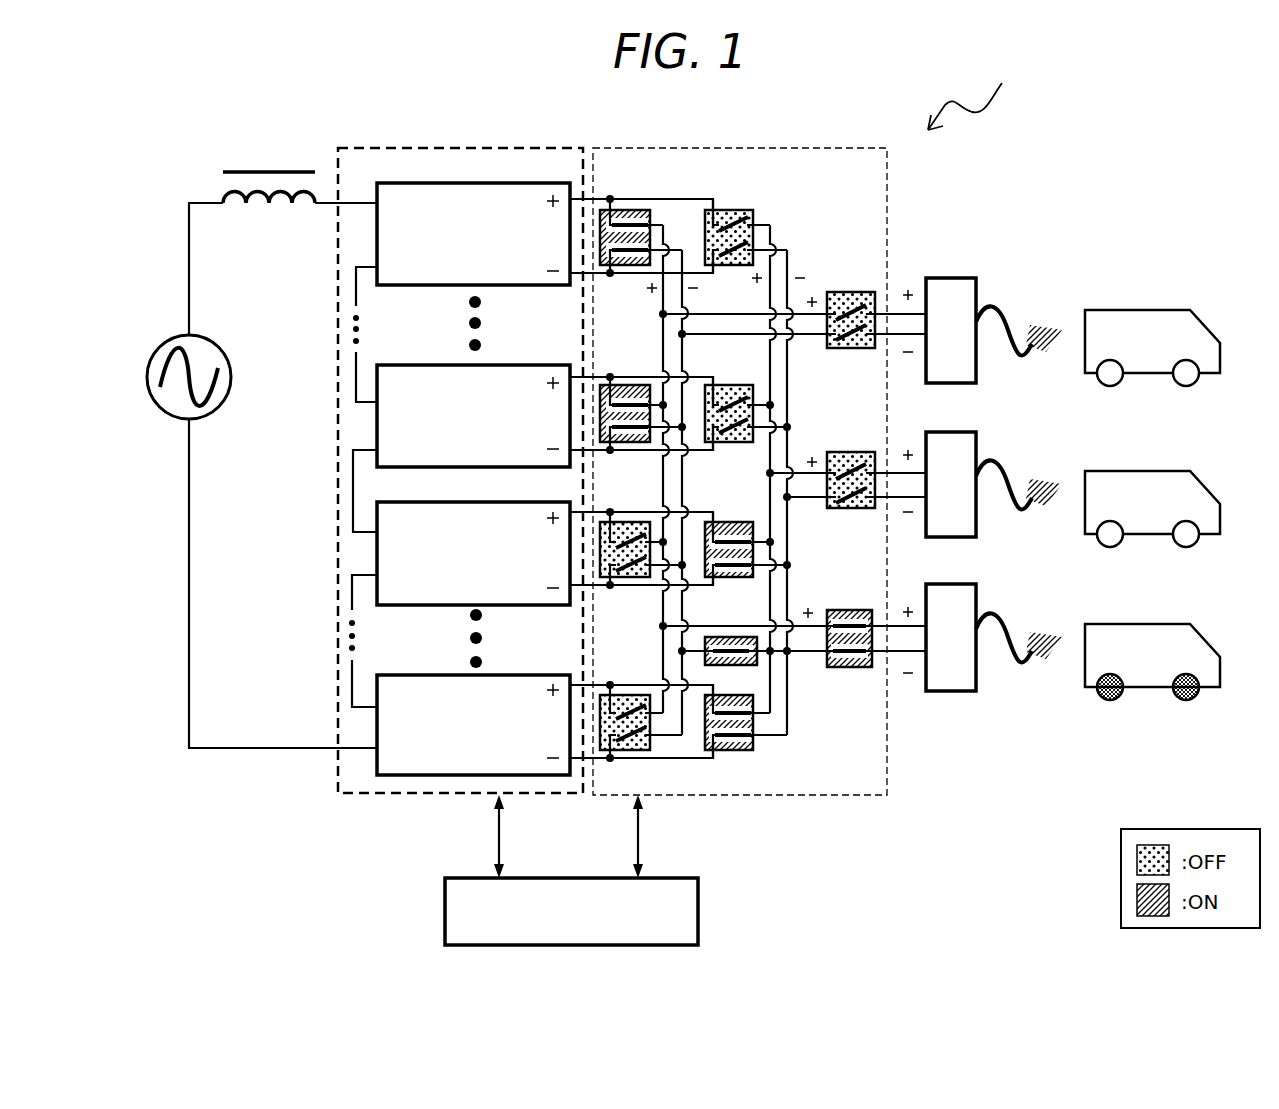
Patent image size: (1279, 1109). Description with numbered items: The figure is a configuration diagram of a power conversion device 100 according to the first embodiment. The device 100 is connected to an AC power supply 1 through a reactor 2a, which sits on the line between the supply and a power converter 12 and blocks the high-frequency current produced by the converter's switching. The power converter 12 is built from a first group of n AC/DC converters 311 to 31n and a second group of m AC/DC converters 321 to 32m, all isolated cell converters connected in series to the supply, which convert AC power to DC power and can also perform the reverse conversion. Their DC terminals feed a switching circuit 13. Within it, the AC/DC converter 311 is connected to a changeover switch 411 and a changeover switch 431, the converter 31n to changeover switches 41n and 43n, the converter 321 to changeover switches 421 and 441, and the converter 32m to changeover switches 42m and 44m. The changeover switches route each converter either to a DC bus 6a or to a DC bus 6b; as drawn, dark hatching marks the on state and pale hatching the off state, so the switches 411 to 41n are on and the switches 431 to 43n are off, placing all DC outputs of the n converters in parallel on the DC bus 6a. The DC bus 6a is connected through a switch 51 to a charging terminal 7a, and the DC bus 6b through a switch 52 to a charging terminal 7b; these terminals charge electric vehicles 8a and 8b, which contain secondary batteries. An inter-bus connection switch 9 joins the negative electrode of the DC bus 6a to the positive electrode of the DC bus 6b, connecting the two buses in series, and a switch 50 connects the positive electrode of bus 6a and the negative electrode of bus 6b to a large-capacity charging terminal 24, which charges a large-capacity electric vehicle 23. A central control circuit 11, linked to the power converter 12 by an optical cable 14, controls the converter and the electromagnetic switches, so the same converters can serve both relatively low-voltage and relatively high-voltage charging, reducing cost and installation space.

The power conversion device 100 is at (984, 95).
The AC power supply 1 is at (150, 405).
The reactor 2a is at (270, 172).
The power converter 12 is at (338, 795).
The switching circuit 13 is at (745, 796).
The AC/DC converter 311 is at (447, 183).
The AC/DC converter 31n is at (493, 364).
The AC/DC converter 321 is at (486, 500).
The AC/DC converter 32m is at (492, 673).
The changeover switch 411 is at (628, 210).
The changeover switch 41n is at (640, 368).
The changeover switch 421 is at (625, 522).
The changeover switch 42m is at (625, 695).
The changeover switch 431 is at (733, 210).
The changeover switch 43n is at (735, 385).
The changeover switch 441 is at (733, 522).
The changeover switch 44m is at (745, 752).
The DC bus 6a is at (677, 250).
The DC bus 6b is at (785, 250).
The switch 51 is at (833, 292).
The switch 52 is at (833, 452).
The switch 50 is at (833, 610).
The inter-bus connection switch 9 is at (752, 665).
The charging terminal 7a is at (957, 278).
The charging terminal 7b is at (977, 463).
The large-capacity charging terminal 24 is at (963, 693).
The electric vehicle 8a is at (1160, 310).
The electric vehicle 8b is at (1160, 471).
The large-capacity electric vehicle 23 is at (1165, 624).
The central control circuit 11 is at (445, 895).
The optical cable 14 is at (499, 830).